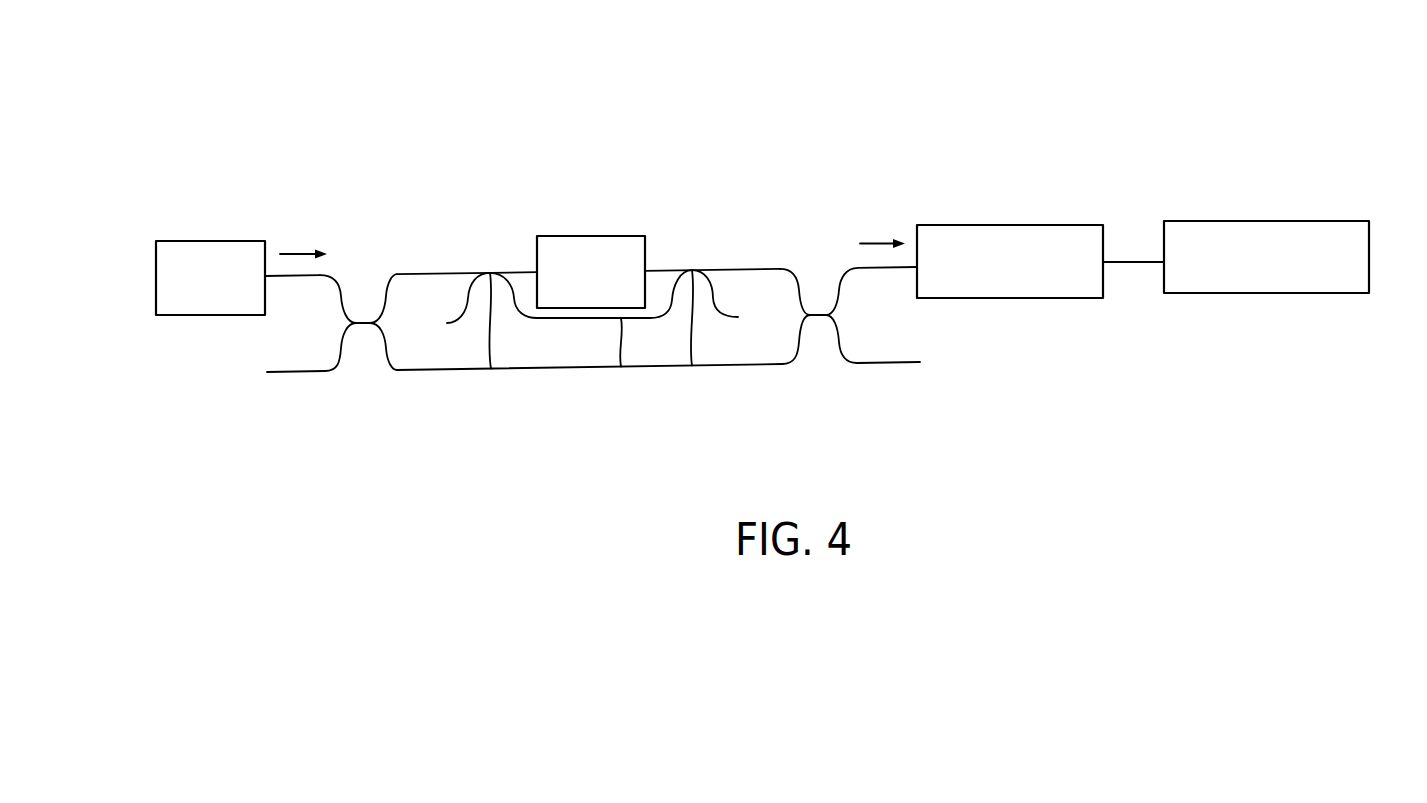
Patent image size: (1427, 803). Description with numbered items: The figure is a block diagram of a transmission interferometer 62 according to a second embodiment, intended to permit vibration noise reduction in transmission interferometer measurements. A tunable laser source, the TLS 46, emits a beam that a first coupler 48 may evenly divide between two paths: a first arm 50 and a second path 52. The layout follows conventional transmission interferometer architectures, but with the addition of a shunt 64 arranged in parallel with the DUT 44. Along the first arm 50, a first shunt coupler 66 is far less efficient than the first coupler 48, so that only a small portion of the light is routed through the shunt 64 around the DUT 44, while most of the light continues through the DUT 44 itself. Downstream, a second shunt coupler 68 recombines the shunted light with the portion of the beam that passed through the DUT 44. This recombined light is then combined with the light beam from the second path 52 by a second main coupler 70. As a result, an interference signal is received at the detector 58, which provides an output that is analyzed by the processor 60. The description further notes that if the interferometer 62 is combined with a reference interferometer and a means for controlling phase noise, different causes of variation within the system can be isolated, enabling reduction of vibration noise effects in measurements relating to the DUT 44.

The DUT 44 is at (625, 246).
The TLS 46 is at (167, 308).
The first coupler 48 is at (363, 323).
The first arm 50 is at (446, 274).
The second path 52 is at (446, 371).
The detector 58 is at (1080, 280).
The processor 60 is at (1350, 277).
The interferometer 62 is at (1017, 77).
The shunt 64 is at (621, 367).
The first shunt coupler 66 is at (491, 369).
The second shunt coupler 68 is at (692, 366).
The second main coupler 70 is at (818, 315).